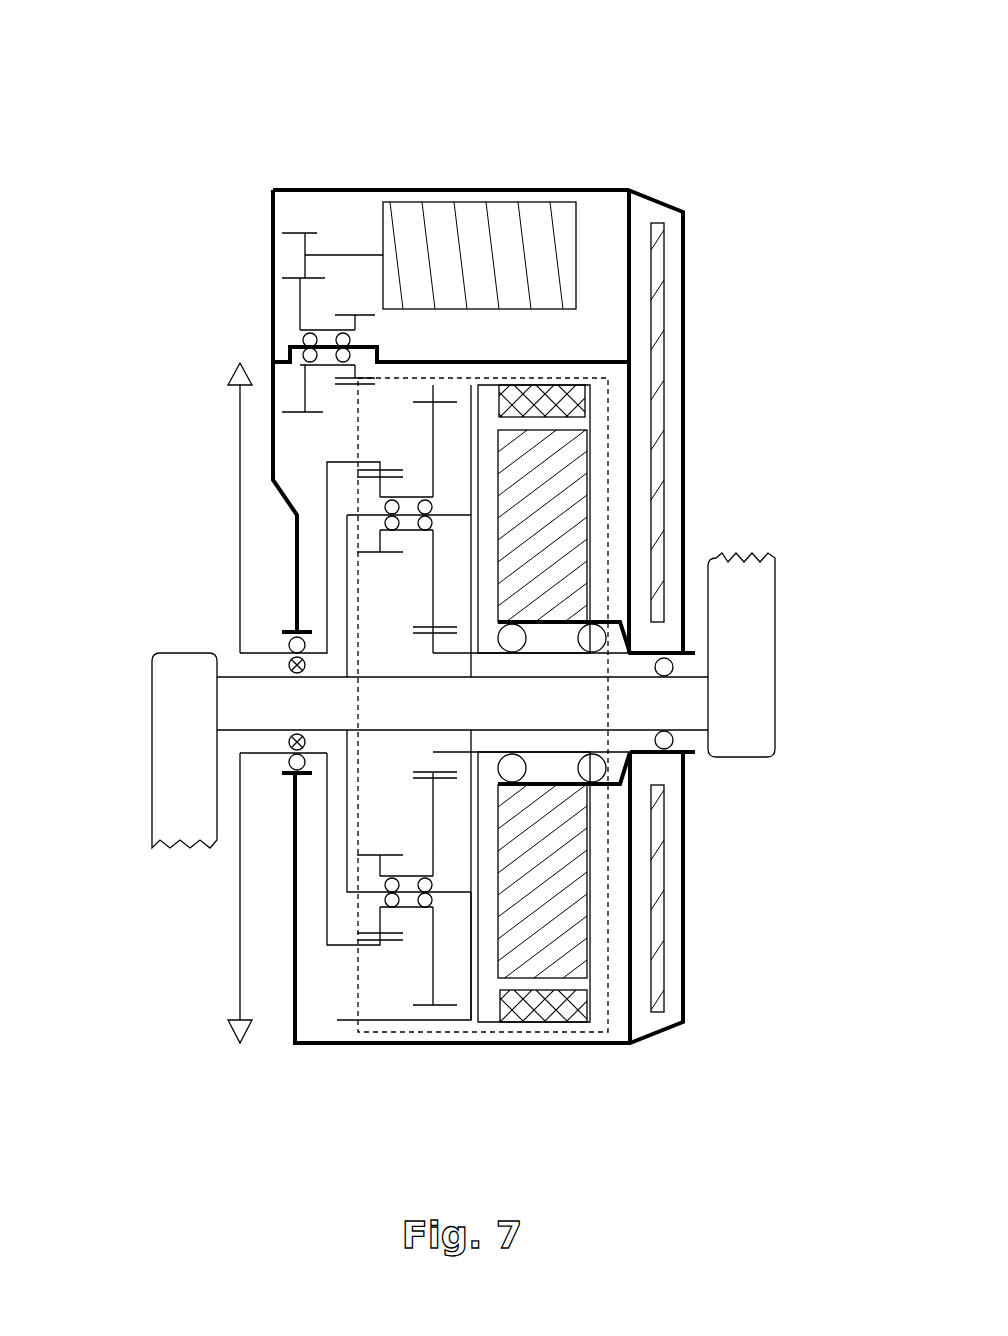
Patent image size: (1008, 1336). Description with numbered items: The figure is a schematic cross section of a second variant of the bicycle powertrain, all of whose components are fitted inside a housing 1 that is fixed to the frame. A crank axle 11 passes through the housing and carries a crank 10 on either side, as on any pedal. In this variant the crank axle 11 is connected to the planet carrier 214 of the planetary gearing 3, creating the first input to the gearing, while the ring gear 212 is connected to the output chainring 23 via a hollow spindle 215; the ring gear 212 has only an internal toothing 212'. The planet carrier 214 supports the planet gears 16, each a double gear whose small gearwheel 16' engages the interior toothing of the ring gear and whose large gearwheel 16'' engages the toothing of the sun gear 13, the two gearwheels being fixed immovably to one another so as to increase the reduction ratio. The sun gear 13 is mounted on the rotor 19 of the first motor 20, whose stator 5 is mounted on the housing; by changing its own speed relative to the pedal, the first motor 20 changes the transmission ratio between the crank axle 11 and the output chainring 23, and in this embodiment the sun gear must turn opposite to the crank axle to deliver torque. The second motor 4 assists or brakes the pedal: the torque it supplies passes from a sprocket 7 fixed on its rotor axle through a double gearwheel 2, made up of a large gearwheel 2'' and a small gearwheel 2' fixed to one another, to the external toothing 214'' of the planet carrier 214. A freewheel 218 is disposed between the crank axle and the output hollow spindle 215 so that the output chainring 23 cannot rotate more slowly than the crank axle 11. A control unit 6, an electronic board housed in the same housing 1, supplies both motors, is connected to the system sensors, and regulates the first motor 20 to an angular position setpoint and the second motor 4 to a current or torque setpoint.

The housing 1 is at (597, 187).
The double gearwheel 2 is at (287, 353).
The small gearwheel 2' is at (349, 211).
The large gearwheel 2'' is at (228, 282).
The planetary gearing 3 is at (357, 805).
The second motor 4 is at (480, 232).
The stator 5 is at (585, 895).
The control unit 6 is at (662, 307).
The sprocket 7 is at (295, 232).
The crank 10 is at (742, 637).
The crank axle 11 is at (675, 730).
The sun gear 13 is at (445, 775).
The planet gear 16 is at (398, 942).
The small gearwheel 16' is at (266, 902).
The large gearwheel 16'' is at (400, 1047).
The rotor 19 is at (478, 1008).
The first motor 20 is at (610, 1002).
The output chainring 23 is at (238, 402).
The ring gear 212 is at (259, 557).
The internal toothing 212' is at (321, 948).
The planet carrier 214 is at (284, 596).
The external toothing 214'' is at (262, 467).
The hollow spindle 215 is at (288, 660).
The freewheel 218 is at (288, 745).